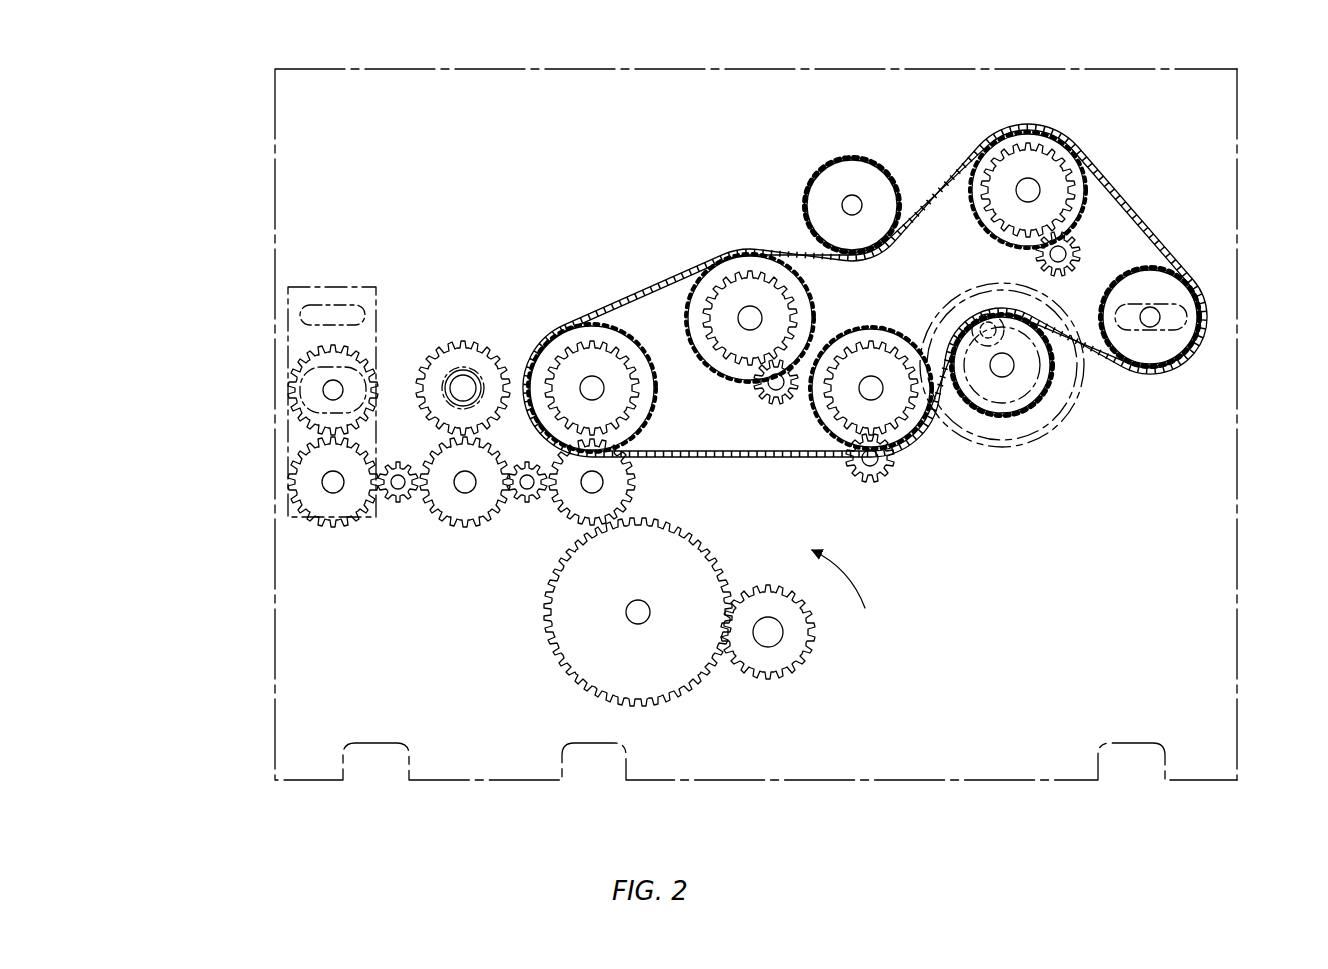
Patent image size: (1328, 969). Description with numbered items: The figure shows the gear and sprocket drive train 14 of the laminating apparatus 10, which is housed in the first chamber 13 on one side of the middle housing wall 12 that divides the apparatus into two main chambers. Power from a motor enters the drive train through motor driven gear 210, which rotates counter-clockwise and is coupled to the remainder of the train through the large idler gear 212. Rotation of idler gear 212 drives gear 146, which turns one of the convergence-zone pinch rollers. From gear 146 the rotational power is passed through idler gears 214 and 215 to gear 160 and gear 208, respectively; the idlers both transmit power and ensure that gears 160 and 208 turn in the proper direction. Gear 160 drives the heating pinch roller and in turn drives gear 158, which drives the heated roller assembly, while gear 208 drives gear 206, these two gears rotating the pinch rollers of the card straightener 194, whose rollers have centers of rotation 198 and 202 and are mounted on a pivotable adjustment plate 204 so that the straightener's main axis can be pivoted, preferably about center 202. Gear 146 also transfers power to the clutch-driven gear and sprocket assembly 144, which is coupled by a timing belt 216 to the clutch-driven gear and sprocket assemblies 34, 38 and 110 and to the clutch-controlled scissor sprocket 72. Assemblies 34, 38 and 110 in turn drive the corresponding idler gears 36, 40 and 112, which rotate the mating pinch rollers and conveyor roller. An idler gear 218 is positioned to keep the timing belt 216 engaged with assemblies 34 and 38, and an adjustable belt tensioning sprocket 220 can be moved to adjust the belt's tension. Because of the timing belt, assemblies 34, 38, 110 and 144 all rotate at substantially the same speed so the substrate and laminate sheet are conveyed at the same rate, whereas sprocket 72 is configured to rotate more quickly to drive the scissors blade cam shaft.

The apparatus 10 is at (196, 150).
The middle housing wall 12 is at (1240, 482).
The first chamber 13 is at (482, 100).
The gear and sprocket drive train 14 is at (790, 682).
The clutch-driven gear and sprocket assembly 34 is at (1000, 198).
The idler gear 36 is at (1080, 253).
The clutch-driven gear and sprocket assembly 38 is at (735, 252).
The idler gear 40 is at (764, 390).
The clutch-controlled sprocket assembly 72 is at (1035, 392).
The clutch-controlled gear and sprocket assembly 110 is at (880, 365).
The idler gear 112 is at (885, 476).
The clutch-driven gear and sprocket assembly 144 is at (580, 359).
The idler gear 146 is at (626, 485).
The gear 158 is at (465, 343).
The gear 160 is at (462, 523).
The card straightener 194 is at (333, 283).
The center of rotation 198 is at (330, 389).
The center of rotation 202 is at (330, 482).
The adjustment plate 204 is at (362, 292).
The gear 206 is at (318, 352).
The gear 208 is at (335, 523).
The motor driven gear 210 is at (806, 637).
The large idler gear 212 is at (643, 587).
The idler gear 214 is at (527, 503).
The idler gear 215 is at (398, 503).
The timing belt 216 is at (660, 286).
The idler gear 218 is at (865, 170).
The adjustable belt tensioning sprocket 220 is at (1162, 350).